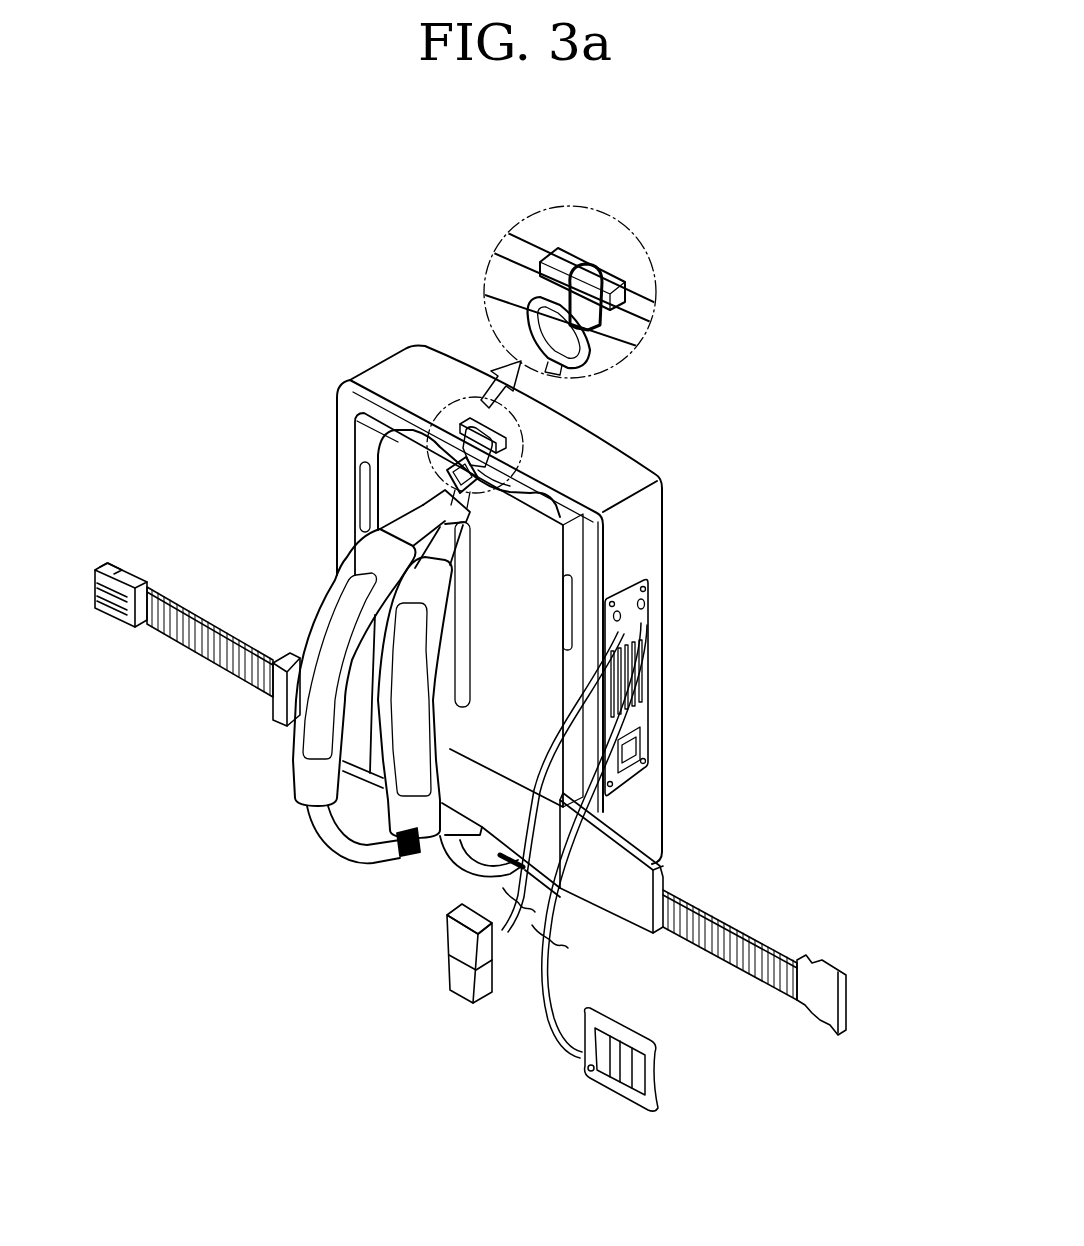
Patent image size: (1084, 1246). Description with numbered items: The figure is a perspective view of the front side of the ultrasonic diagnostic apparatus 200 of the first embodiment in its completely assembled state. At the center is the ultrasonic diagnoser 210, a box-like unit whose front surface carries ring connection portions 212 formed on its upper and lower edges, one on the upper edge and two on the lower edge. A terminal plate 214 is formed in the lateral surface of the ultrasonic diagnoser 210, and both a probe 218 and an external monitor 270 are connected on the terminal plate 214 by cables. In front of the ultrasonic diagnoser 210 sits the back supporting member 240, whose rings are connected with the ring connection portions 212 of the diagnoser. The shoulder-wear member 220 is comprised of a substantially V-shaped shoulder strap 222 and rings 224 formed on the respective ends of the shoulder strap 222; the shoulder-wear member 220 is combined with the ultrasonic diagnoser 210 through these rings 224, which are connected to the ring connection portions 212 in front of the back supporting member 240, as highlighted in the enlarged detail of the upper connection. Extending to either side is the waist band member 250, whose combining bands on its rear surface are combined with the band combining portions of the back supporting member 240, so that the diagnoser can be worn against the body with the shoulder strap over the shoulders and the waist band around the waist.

The ultrasonic diagnostic apparatus 200 is at (876, 240).
The ultrasonic diagnoser 210 is at (664, 546).
The ring connection portion 212 is at (625, 290).
The terminal plate 214 is at (655, 699).
The probe 218 is at (457, 965).
The shoulder-wear member 220 is at (293, 605).
The shoulder strap 222 is at (310, 768).
The ring 224 is at (522, 278).
The back supporting member 240 is at (568, 541).
The waist band member 250 is at (602, 849).
The external monitor 270 is at (618, 1028).